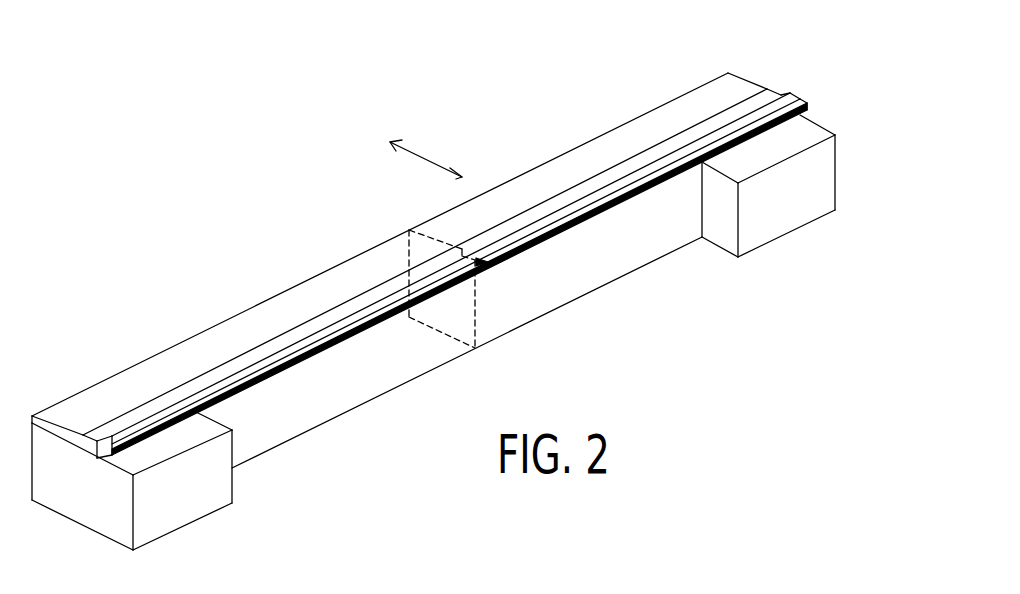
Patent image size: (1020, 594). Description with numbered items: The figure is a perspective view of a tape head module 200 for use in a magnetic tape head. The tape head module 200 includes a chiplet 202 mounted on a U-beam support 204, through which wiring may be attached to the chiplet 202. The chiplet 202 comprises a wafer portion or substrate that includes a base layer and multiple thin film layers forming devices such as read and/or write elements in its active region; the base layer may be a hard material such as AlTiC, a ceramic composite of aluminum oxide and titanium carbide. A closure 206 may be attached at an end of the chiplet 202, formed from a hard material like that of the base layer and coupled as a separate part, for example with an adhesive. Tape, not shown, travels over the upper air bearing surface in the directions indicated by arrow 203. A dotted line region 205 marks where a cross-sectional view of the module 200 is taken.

The tape head module 200 is at (464, 275).
The chiplet 202 is at (775, 89).
The arrow 203 is at (427, 160).
The U-beam support 204 is at (628, 258).
The dotted line region 205 is at (406, 257).
The closure 206 is at (807, 101).